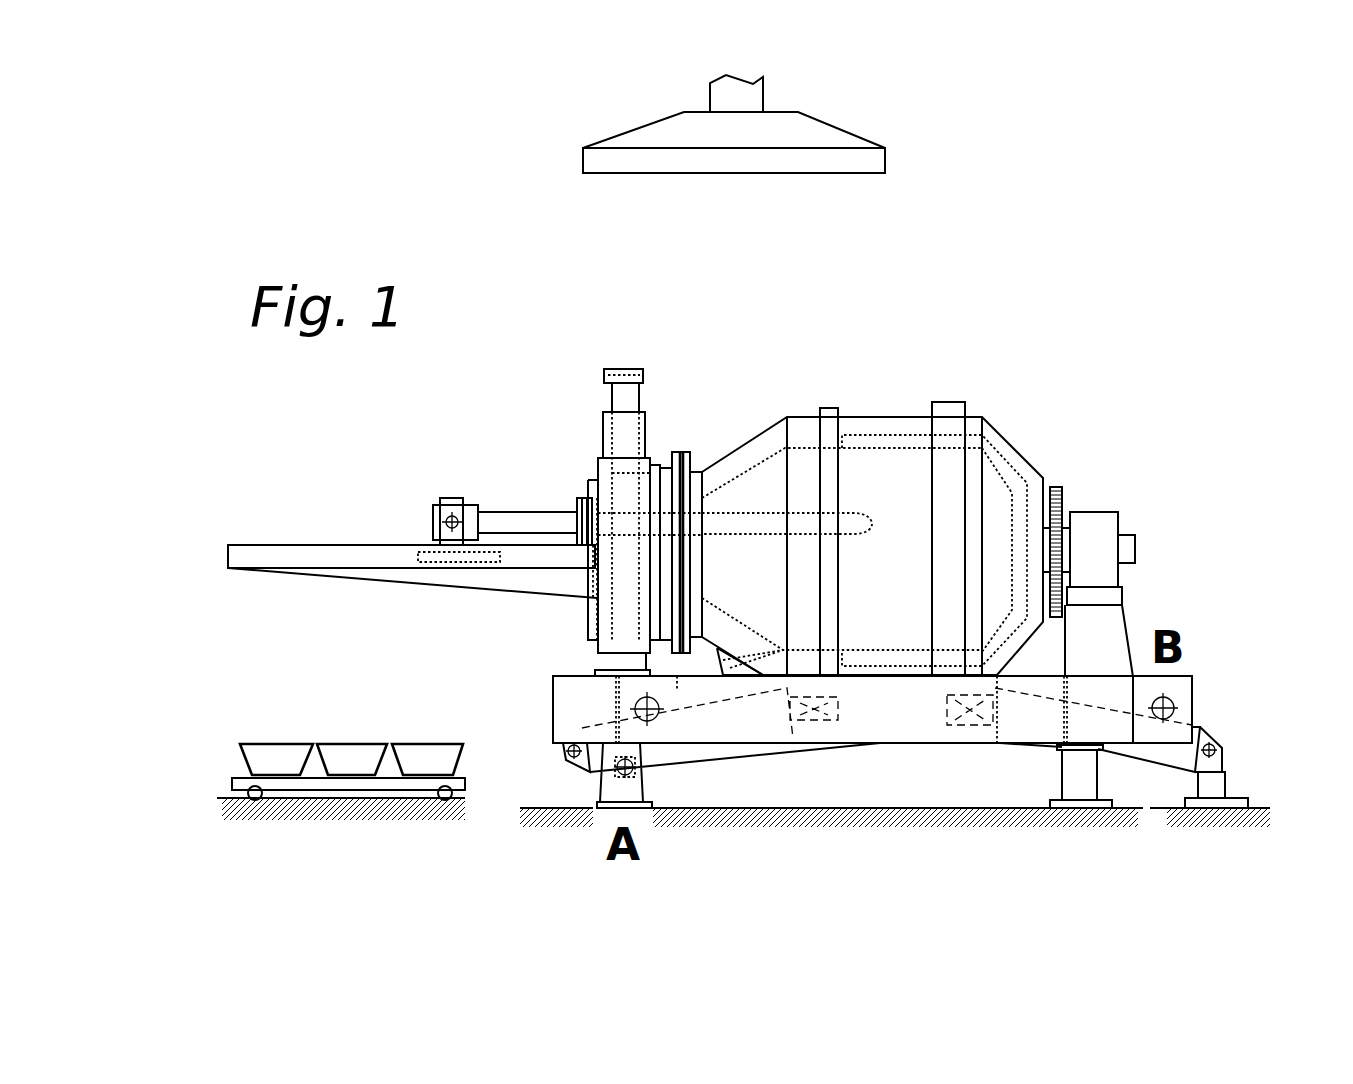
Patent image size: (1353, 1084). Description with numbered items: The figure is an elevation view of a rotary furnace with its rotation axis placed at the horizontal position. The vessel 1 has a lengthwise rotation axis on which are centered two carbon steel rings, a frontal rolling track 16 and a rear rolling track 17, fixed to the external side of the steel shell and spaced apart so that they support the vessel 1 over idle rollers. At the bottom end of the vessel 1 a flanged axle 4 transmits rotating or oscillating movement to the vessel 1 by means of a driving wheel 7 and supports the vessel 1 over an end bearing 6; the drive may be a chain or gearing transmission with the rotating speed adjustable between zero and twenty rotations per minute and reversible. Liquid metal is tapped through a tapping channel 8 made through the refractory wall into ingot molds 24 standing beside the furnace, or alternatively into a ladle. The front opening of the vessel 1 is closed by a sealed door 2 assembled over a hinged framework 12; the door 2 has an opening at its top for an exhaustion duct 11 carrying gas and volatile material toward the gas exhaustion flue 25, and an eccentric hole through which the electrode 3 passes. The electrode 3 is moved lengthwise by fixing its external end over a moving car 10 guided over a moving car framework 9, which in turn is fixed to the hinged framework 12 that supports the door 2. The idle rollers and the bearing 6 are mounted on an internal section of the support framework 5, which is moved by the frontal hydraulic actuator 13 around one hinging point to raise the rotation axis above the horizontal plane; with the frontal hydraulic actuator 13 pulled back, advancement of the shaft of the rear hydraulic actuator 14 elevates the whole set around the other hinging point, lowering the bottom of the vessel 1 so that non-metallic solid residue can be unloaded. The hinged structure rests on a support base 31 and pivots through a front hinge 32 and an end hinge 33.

The vessel 1 is at (750, 455).
The door 2 is at (656, 462).
The electrode 3 is at (522, 512).
The flanged axle 4 is at (1130, 535).
The support framework 5 is at (553, 708).
The bearing 6 is at (1090, 512).
The driving wheel 7 is at (1062, 486).
The tapping channel 8 is at (718, 660).
The moving car framework 9 is at (273, 537).
The moving car 10 is at (450, 500).
The exhaustion duct 11 is at (607, 382).
The hinged framework 12 is at (593, 633).
The frontal hydraulic actuator 13 is at (667, 753).
The rear hydraulic actuator 14 is at (1165, 763).
The steel ring, frontal rolling track 16 is at (830, 408).
The steel ring, rear rolling track 17 is at (950, 402).
The ingot molds 24 is at (240, 763).
The gas exhaustion flue 25 is at (830, 122).
The support base of the hinged structure 31 is at (1073, 788).
The front hinge 32 is at (615, 786).
The end hinge 33 is at (1242, 770).